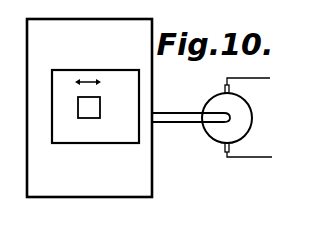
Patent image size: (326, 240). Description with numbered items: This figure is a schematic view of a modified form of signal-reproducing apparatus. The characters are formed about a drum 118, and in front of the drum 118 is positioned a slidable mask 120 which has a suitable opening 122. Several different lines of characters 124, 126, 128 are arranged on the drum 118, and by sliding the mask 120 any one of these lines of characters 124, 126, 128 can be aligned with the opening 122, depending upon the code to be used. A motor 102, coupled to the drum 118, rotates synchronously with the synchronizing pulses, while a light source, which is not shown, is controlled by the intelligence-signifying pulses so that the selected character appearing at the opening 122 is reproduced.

The motor 102 is at (210, 98).
The drum 118 is at (152, 172).
The slidable mask 120 is at (139, 137).
The opening 122 is at (100, 112).
The line of characters 124 is at (126, 198).
The line of characters 126 is at (89, 198).
The line of characters 128 is at (53, 198).